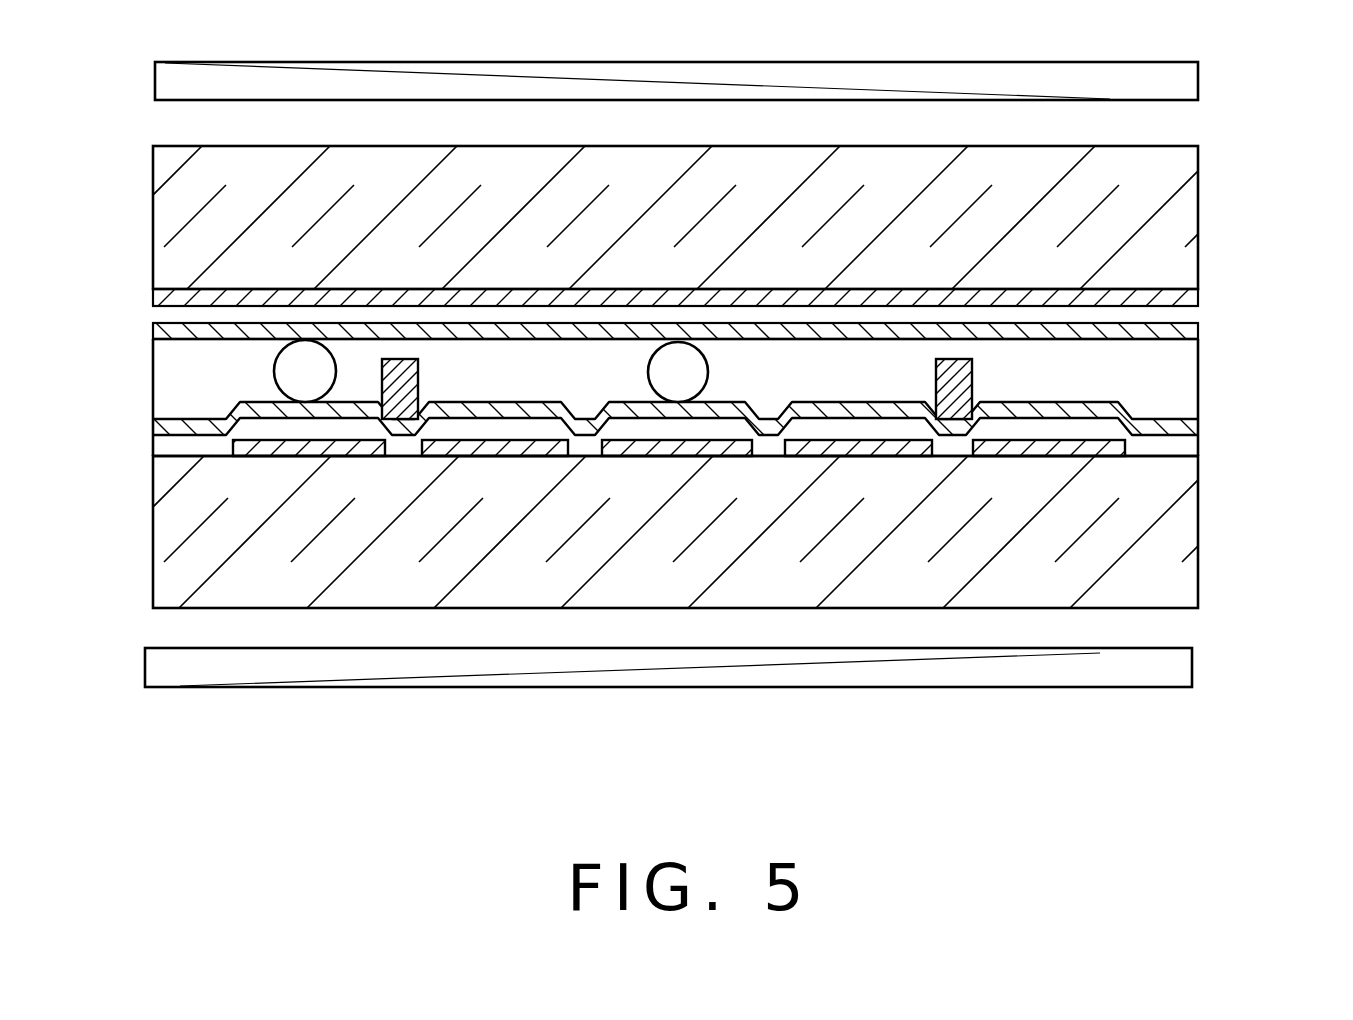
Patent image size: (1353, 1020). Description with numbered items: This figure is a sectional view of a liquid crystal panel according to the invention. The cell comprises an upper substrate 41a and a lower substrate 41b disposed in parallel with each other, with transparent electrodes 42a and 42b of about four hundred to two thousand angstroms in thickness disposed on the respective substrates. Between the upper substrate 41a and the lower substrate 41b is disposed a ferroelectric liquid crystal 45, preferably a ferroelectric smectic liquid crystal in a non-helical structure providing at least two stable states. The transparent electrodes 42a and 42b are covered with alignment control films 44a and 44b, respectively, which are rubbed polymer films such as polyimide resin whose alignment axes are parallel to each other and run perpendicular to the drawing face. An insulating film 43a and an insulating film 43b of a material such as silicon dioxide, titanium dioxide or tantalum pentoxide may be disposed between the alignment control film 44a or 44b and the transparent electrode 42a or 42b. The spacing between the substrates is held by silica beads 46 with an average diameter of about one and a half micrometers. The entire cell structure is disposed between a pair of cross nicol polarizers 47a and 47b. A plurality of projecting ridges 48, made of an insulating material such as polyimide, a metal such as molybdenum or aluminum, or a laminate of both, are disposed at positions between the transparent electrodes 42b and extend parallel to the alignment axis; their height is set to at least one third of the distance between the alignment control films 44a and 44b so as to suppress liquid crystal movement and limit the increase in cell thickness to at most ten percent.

The upper substrate 41a is at (1200, 190).
The lower substrate 41b is at (1200, 530).
The transparent electrode 42a is at (1200, 298).
The transparent electrode 42b is at (232, 450).
The insulating film 43a is at (1200, 313).
The insulating film 43b is at (1182, 450).
The alignment control film 44a is at (1200, 334).
The alignment control film 44b is at (1200, 427).
The ferroelectric liquid crystal 45 is at (1182, 386).
The silica beads 46 is at (274, 371).
The cross nicol polarizer 47a is at (1200, 81).
The cross nicol polarizer 47b is at (1194, 662).
The projecting ridges 48 is at (420, 373).